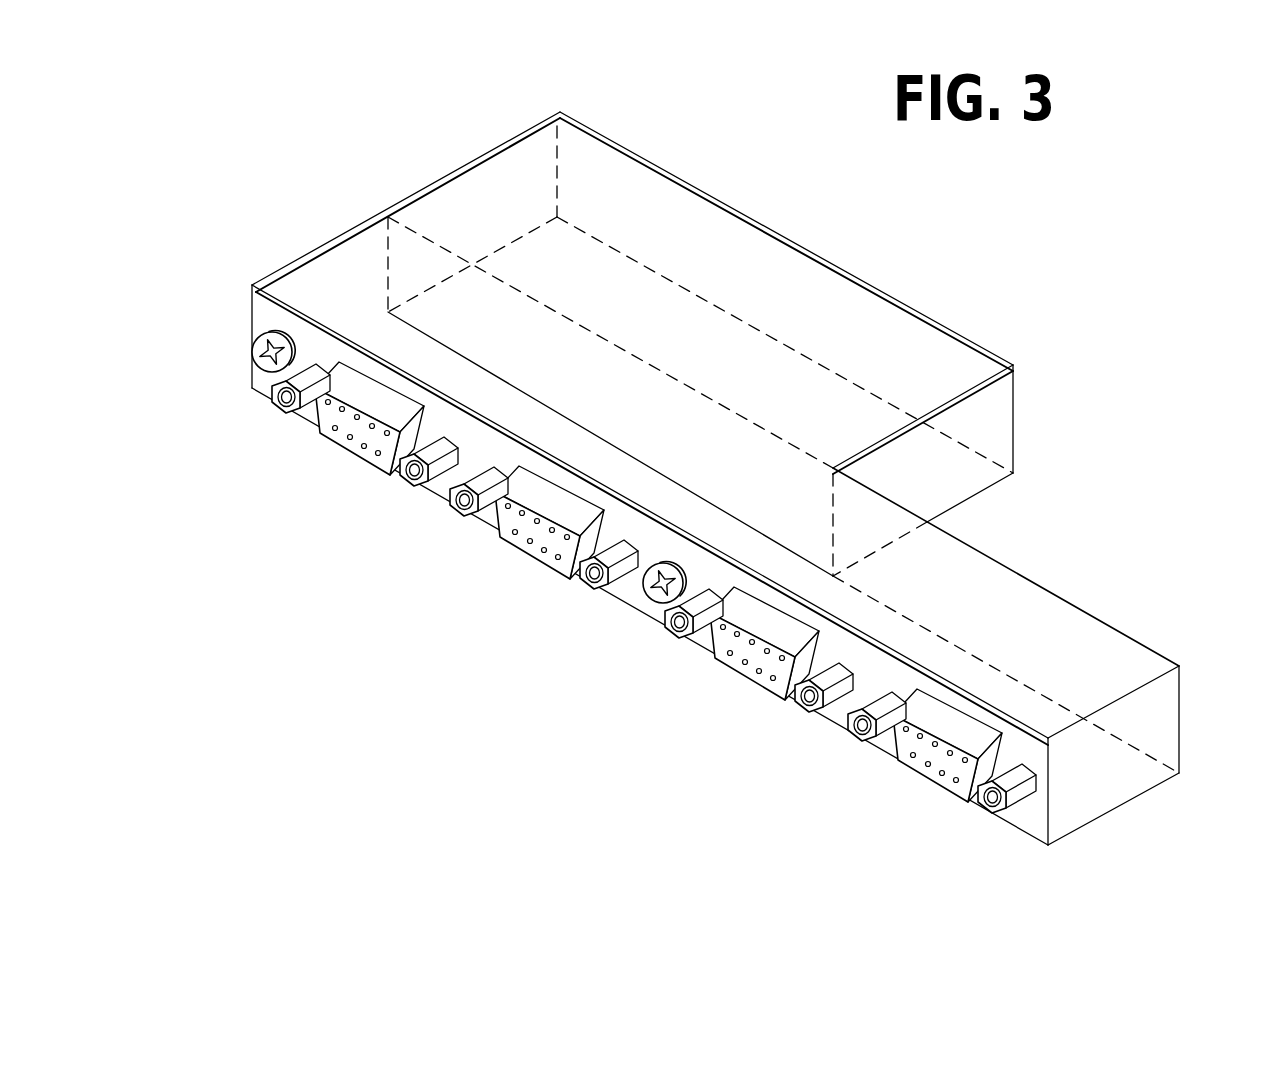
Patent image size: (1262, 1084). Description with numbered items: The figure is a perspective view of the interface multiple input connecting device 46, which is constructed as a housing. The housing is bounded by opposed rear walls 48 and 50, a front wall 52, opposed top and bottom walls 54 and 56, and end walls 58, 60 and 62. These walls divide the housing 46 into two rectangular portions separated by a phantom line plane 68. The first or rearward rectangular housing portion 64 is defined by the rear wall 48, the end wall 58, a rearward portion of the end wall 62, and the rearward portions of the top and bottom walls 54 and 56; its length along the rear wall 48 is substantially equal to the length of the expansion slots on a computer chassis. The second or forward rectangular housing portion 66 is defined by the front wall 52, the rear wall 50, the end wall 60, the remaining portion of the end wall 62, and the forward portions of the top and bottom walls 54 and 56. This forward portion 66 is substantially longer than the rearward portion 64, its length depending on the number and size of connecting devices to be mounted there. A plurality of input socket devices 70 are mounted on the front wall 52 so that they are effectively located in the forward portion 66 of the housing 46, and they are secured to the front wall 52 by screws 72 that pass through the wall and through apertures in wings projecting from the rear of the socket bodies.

The interface multiple input connecting device 46 is at (1056, 281).
The rear wall 48 is at (762, 283).
The rear wall 50 is at (1014, 616).
The front wall 52 is at (270, 319).
The top wall 54 is at (563, 367).
The bottom wall 56 is at (708, 365).
The end wall 58 is at (984, 427).
The end wall 60 is at (1167, 705).
The end wall 62 is at (335, 272).
The first rectangular housing portion 64 is at (646, 195).
The second rectangular housing portion 66 is at (307, 290).
The phantom line plane 68 is at (466, 263).
The input socket devices 70 is at (347, 452).
The screws 72 is at (280, 410).